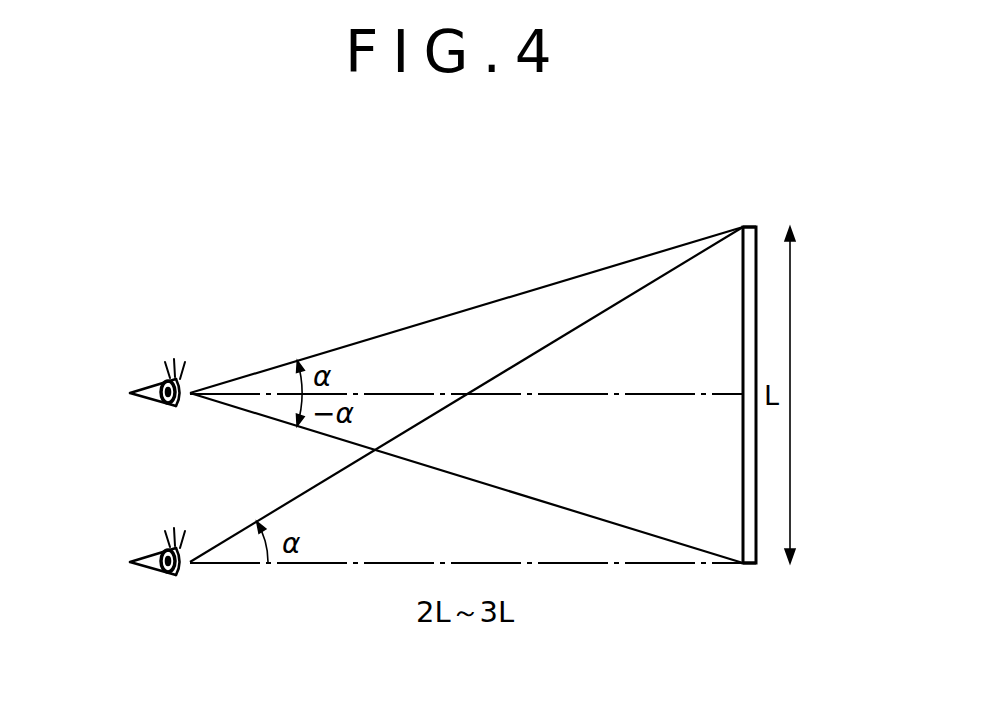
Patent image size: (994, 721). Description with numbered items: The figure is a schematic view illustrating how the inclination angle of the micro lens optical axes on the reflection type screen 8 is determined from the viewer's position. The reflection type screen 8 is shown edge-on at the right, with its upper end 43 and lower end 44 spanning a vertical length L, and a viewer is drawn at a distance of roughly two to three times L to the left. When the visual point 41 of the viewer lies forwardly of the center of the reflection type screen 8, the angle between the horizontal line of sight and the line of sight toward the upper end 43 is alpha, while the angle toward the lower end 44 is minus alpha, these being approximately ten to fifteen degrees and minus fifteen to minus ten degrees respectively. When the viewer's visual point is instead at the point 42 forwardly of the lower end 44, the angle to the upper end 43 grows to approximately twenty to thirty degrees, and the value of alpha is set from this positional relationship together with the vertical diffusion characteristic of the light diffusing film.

The reflection type screen 8 is at (749, 258).
The visual point 41 is at (137, 385).
The point 42 is at (137, 554).
The upper end 43 is at (748, 226).
The lower end 44 is at (745, 565).